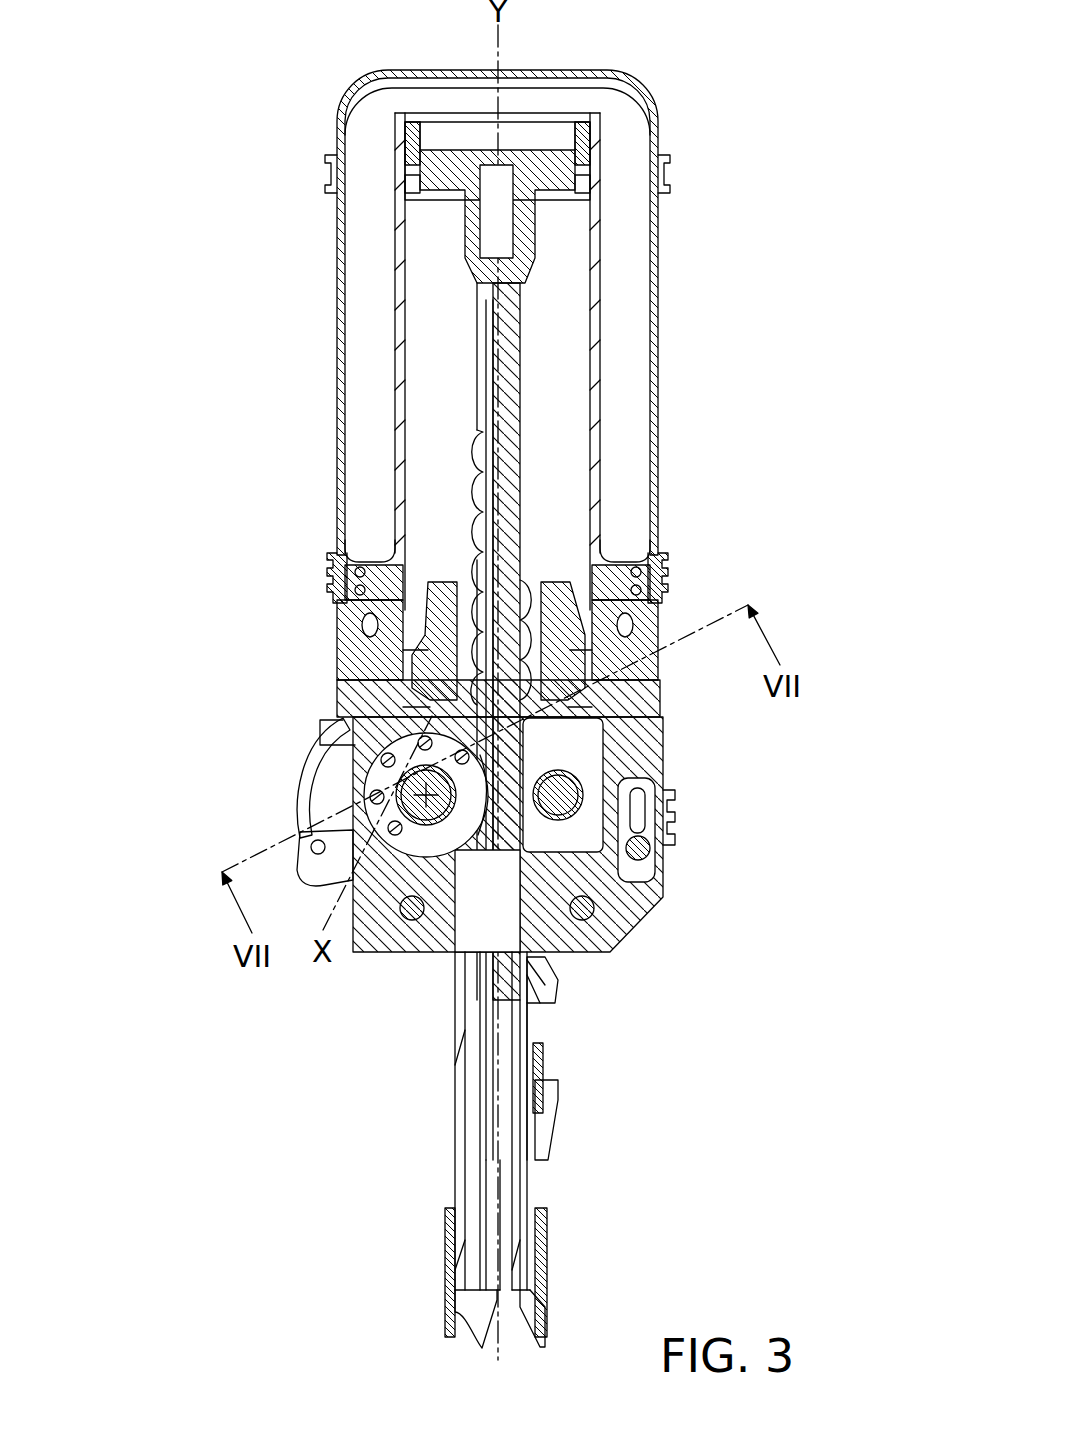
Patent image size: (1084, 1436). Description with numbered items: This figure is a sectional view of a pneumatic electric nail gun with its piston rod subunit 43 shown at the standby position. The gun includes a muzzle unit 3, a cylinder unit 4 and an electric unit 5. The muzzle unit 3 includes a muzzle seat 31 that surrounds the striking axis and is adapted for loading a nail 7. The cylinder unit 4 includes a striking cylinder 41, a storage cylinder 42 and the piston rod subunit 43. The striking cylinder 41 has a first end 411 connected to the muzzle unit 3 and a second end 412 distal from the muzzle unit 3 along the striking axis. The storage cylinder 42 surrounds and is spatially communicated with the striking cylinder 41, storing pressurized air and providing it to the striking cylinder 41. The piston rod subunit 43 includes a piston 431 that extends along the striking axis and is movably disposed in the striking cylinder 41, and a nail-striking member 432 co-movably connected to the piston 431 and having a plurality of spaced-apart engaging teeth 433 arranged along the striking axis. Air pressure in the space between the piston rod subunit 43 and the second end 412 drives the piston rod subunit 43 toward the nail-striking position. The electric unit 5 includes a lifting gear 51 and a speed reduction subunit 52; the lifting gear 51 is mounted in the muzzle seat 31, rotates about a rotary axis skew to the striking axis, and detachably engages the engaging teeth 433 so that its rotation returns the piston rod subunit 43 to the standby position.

The muzzle unit 3 is at (636, 931).
The cylinder unit 4 is at (662, 238).
The striking cylinder 41 is at (600, 325).
The storage cylinder 42 is at (335, 358).
The piston rod subunit 43 is at (467, 258).
The first end 411 is at (643, 717).
The second end 412 is at (395, 113).
The piston 431 is at (593, 117).
The nail-striking member 432 is at (520, 372).
The engaging teeth 433 is at (470, 443).
The electric unit 5 is at (303, 790).
The lifting gear 51 is at (452, 835).
The speed reduction subunit 52 is at (323, 765).
The nail 7 is at (524, 986).
The muzzle seat 31 is at (455, 950).